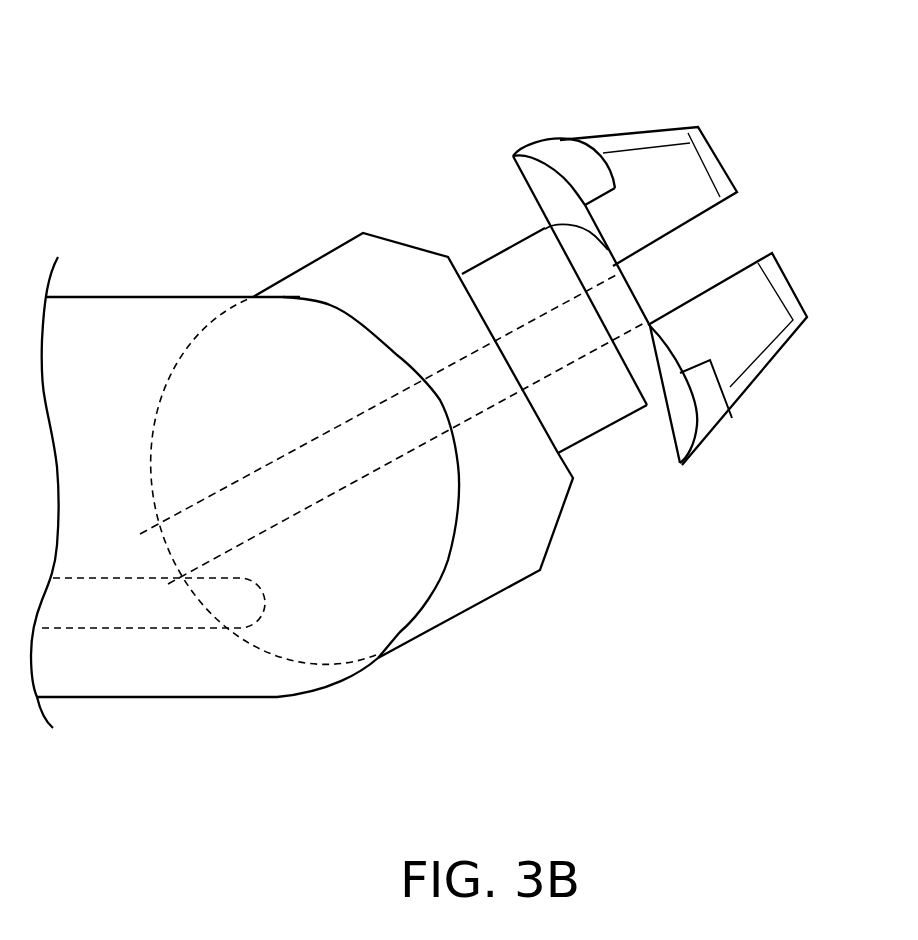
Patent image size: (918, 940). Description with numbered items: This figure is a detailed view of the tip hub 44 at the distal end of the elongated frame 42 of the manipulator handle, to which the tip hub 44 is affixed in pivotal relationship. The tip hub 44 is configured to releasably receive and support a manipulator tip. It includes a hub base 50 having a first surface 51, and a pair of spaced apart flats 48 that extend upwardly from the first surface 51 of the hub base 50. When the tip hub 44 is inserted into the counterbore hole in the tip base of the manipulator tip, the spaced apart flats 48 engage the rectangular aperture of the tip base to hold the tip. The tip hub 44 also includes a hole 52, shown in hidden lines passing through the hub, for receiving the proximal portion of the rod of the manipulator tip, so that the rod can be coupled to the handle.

The frame 42 is at (92, 290).
The tip hub 44 is at (679, 318).
The spaced apart flats 48 is at (682, 205).
The hub base 50 is at (680, 425).
The first surface 51 is at (677, 358).
The hole 52 is at (527, 310).